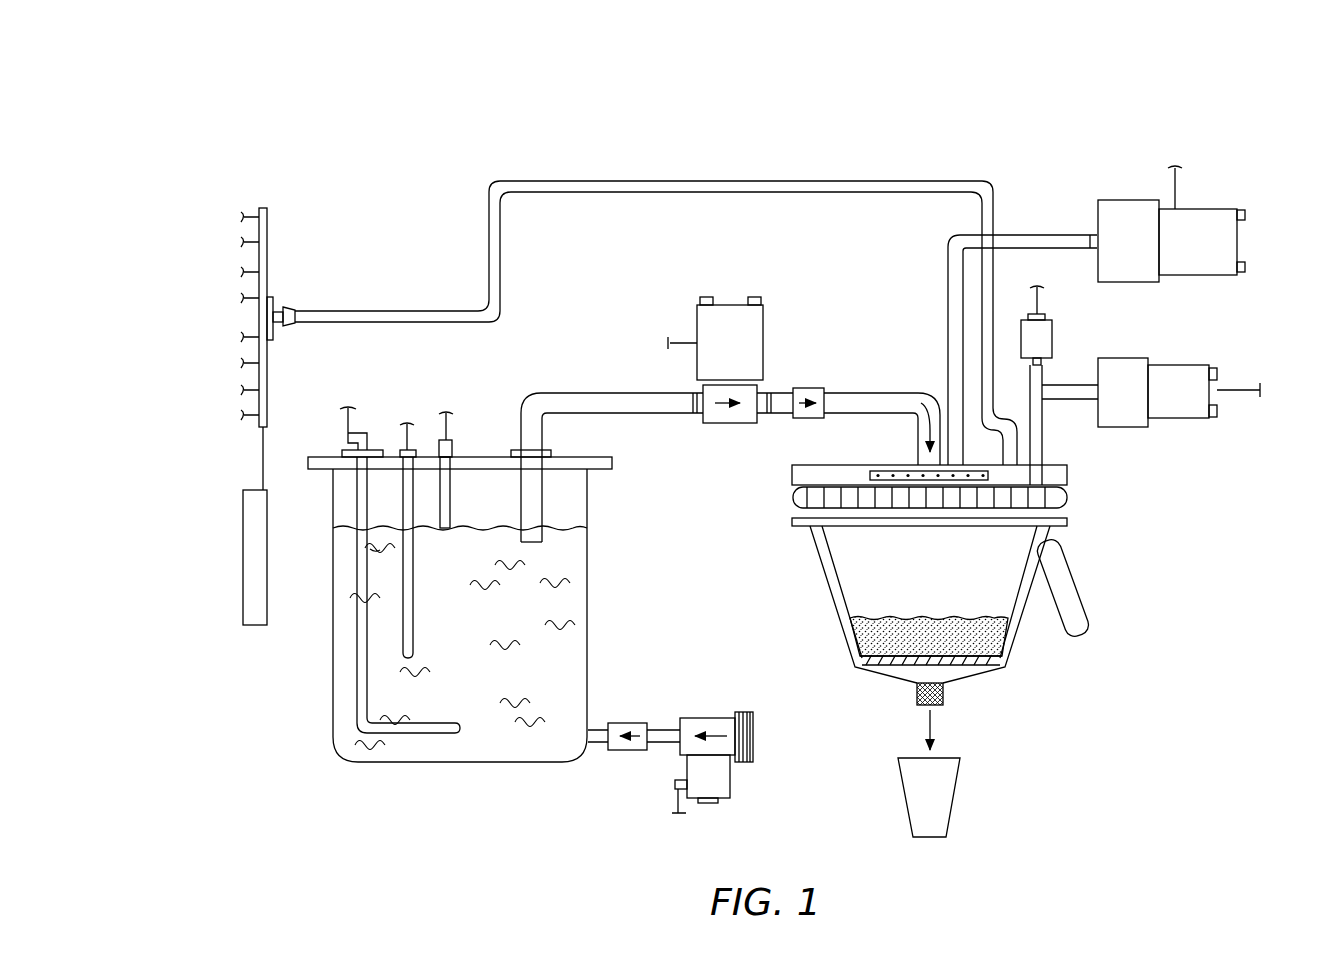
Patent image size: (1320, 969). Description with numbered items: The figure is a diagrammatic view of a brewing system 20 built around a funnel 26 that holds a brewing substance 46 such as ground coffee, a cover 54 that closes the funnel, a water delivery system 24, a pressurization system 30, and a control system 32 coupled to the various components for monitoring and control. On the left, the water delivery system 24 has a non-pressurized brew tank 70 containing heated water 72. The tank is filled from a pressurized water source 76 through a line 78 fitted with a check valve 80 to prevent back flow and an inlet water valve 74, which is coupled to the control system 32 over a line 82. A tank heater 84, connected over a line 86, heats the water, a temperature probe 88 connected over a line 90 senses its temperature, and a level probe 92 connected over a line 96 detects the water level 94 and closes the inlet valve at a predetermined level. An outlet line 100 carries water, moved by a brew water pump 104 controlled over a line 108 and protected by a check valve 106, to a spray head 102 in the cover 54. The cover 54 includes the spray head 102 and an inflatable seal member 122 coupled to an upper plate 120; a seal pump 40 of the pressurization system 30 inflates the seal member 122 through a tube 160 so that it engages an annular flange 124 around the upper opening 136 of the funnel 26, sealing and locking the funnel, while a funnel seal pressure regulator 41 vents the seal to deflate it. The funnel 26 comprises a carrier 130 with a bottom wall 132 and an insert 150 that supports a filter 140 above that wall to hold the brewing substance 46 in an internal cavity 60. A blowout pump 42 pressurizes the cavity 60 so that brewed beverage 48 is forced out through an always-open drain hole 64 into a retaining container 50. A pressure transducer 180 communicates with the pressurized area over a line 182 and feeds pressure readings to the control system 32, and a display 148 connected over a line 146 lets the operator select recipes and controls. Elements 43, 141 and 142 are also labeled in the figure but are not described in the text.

The brewing system 20 is at (147, 145).
The water delivery system 24 is at (645, 522).
The funnel 26 is at (1108, 572).
The pressurization system 30 is at (1050, 168).
The control system 32 is at (255, 165).
The seal pump 40 is at (1180, 418).
The funnel seal pressure regulator 41 is at (1052, 340).
The blowout pump 42 is at (1237, 212).
The control wire 43 is at (244, 212).
The brewing substance 46 is at (865, 632).
The brewed beverage 48 is at (940, 733).
The retaining container 50 is at (972, 800).
The cover 54 is at (780, 482).
The internal cavity 60 is at (1010, 557).
The drain hole 64 is at (916, 695).
The brew tank 70 is at (333, 685).
The heated water 72 is at (565, 620).
The inlet water valve 74 is at (708, 804).
The pressurized water source 76 is at (762, 735).
The line 78 is at (597, 745).
The check valve 80 is at (625, 752).
The line 82 is at (243, 242).
The tank heater 84 is at (357, 620).
The line 86 is at (243, 272).
The temperature probe 88 is at (413, 610).
The line 90 is at (243, 337).
The level probe 92 is at (450, 495).
The water level 94 is at (575, 528).
The line 96 is at (243, 363).
The outlet line 100 is at (541, 405).
The spray head 102 is at (870, 475).
The brew water pump 104 is at (732, 305).
The check valve 106 is at (808, 388).
The line 108 is at (243, 390).
The upper plate 120 is at (890, 471).
The inflatable seal member 122 is at (1067, 498).
The flange 124 is at (792, 522).
The carrier 130 is at (1048, 612).
The bottom wall 132 is at (885, 676).
The upper opening 136 is at (875, 532).
The filter 140 is at (1005, 603).
The sensor control line 141 is at (243, 298).
The pump control line 142 is at (243, 420).
The line 146 is at (262, 455).
The display 148 is at (243, 555).
The insert 150 is at (965, 670).
The tube 160 is at (1043, 442).
The pressure transducer 180 is at (273, 330).
The line 182 is at (985, 181).